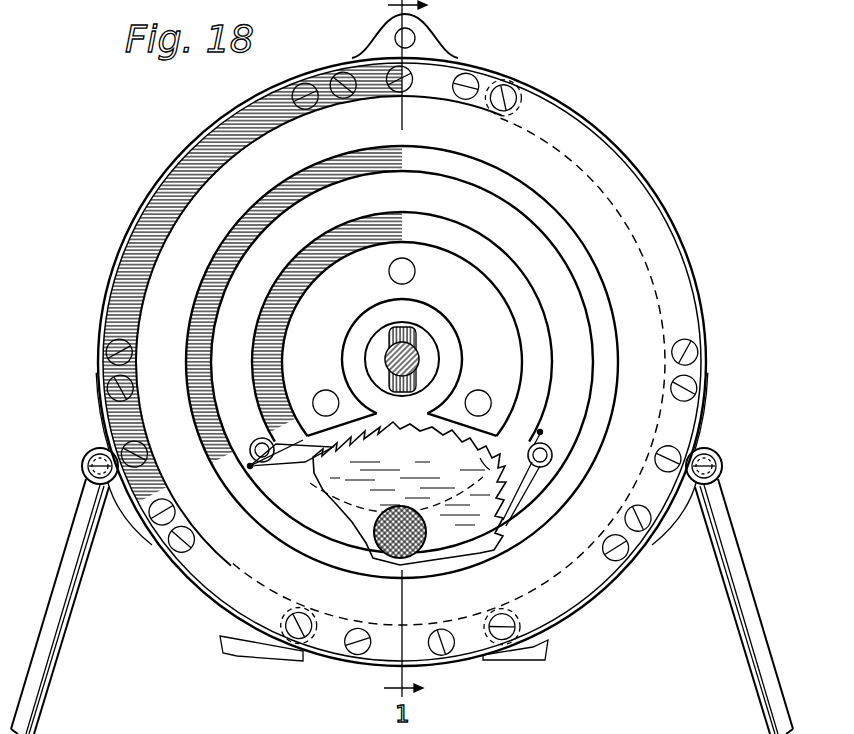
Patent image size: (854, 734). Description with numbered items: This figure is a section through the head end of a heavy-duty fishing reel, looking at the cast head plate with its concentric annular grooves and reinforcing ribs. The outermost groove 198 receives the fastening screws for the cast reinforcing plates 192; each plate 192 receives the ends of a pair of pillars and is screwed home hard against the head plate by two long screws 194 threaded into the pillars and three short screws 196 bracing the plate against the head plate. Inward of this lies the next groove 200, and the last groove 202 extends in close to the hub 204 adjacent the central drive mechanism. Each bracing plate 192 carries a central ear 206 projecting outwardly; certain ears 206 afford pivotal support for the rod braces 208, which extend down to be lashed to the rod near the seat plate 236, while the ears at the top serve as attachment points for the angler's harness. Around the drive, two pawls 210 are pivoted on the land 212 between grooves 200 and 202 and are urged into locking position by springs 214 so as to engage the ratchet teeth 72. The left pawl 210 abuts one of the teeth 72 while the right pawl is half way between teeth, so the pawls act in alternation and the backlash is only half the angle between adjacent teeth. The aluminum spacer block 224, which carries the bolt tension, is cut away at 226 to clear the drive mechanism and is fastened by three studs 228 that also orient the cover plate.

The ratchet teeth 72 is at (482, 461).
The cast plate 192 is at (423, 47).
The long screws 194 is at (466, 73).
The short screws 196 is at (527, 86).
The groove 198 is at (585, 143).
The groove 200 is at (563, 249).
The groove 202 is at (479, 253).
The hub 204 is at (425, 330).
The central ears 206 is at (396, 30).
The rod braces 208 is at (77, 557).
The pawls 210 is at (291, 458).
The land 212 is at (572, 318).
The springs 214 is at (254, 438).
The aluminum spacer block 224 is at (380, 262).
The cut-away 226 is at (455, 420).
The studs 228 is at (396, 275).
The seat plate 236 is at (546, 652).